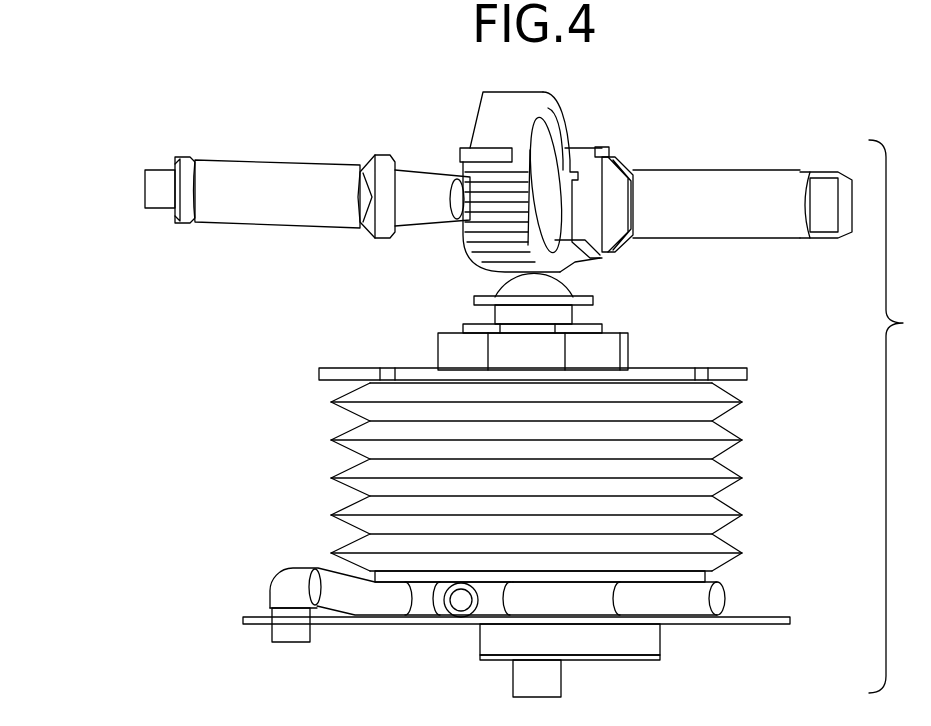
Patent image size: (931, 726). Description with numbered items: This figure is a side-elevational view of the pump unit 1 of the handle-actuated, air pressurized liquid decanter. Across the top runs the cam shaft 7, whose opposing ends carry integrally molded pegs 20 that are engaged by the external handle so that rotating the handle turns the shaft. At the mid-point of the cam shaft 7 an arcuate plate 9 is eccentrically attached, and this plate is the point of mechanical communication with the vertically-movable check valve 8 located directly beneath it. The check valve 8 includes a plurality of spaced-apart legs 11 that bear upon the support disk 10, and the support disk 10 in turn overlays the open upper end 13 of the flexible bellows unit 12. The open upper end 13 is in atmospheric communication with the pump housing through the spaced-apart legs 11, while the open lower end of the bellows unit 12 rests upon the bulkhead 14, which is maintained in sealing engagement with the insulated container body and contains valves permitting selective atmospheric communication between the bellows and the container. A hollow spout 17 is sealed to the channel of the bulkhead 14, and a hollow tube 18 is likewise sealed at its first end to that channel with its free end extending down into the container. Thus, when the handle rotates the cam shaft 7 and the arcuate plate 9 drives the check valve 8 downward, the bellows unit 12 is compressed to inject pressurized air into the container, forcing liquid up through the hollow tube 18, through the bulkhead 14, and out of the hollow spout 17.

The pump unit 1 is at (118, 209).
The cam shaft 7 is at (302, 160).
The vertically-movable check valve 8 is at (593, 300).
The arcuate plate 9 is at (560, 122).
The support disk 10 is at (418, 369).
The spaced-apart legs 11 is at (495, 315).
The flexible bellows unit 12 is at (340, 472).
The open upper end 13 is at (630, 358).
The bulkhead 14 is at (742, 625).
The hollow spout 17 is at (279, 580).
The hollow tube 18 is at (562, 680).
The pegs 20 is at (146, 182).